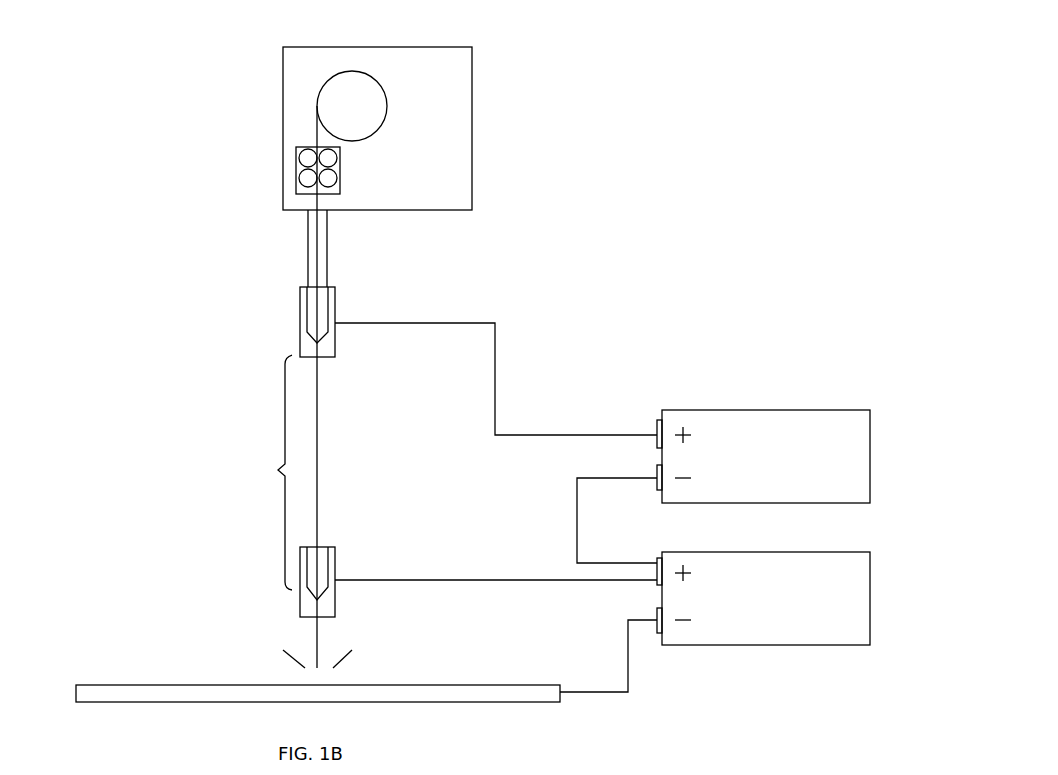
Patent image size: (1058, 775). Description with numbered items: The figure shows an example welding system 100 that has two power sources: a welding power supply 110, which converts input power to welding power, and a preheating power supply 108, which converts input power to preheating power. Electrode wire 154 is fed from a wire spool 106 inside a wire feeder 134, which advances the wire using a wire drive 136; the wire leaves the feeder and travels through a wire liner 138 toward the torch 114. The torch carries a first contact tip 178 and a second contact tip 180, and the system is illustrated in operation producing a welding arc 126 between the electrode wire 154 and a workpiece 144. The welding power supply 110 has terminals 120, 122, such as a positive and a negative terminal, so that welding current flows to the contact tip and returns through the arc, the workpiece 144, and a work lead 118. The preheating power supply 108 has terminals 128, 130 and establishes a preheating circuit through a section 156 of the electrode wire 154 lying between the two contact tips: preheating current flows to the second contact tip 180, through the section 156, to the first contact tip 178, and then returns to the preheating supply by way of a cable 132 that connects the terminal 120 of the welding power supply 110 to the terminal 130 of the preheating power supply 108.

The welding system 100 is at (92, 140).
The wire spool 106 is at (380, 85).
The preheating power supply 108 is at (870, 410).
The welding power supply 110 is at (870, 552).
The torch 114 is at (240, 252).
The work lead 118 is at (630, 694).
The terminal of welding power supply 120 is at (658, 558).
The terminal of welding power supply 122 is at (658, 634).
The welding arc 126 is at (290, 660).
The terminal of preheating power supply 128 is at (658, 420).
The terminal of preheating power supply 130 is at (660, 490).
The cable 132 is at (612, 478).
The wire feeder 134 is at (283, 100).
The wire drive 136 is at (340, 165).
The wire liner 138 is at (308, 240).
The workpiece 144 is at (76, 700).
The electrode wire 154 is at (317, 642).
The section of electrode wire 156 is at (265, 468).
The first contact tip 178 is at (300, 290).
The second contact tip 180 is at (335, 548).